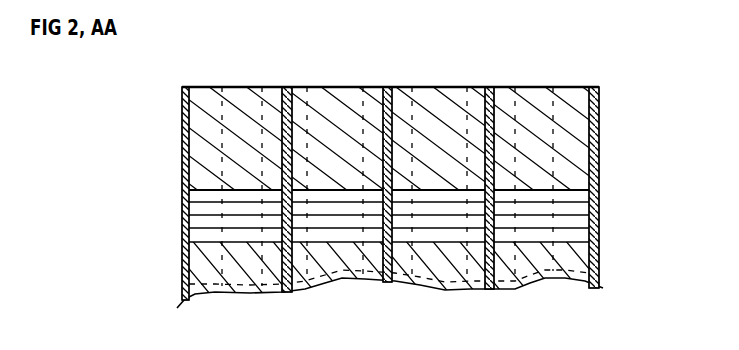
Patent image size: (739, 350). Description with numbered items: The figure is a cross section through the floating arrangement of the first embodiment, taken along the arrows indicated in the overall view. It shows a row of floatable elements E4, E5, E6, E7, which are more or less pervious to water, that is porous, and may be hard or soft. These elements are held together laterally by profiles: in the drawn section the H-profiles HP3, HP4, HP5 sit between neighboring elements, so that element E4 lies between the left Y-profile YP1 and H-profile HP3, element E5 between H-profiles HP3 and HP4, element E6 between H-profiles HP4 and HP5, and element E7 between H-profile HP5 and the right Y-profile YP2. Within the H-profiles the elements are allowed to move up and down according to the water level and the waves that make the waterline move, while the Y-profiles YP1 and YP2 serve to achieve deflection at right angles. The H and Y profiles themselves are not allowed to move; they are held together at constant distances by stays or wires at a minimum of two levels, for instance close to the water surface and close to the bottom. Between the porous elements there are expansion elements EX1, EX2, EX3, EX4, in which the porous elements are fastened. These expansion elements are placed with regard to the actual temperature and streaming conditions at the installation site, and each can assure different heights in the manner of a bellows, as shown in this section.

The Y-profile YP1 is at (183, 86).
The Y-profile YP2 is at (597, 86).
The H-profile HP3 is at (287, 86).
The H-profile HP4 is at (388, 86).
The H-profile HP5 is at (492, 86).
The floatable element E4 is at (238, 86).
The floatable element E5 is at (337, 86).
The floatable element E6 is at (443, 86).
The floatable element E7 is at (545, 86).
The expansion element EX1 is at (207, 222).
The expansion element EX2 is at (345, 233).
The expansion element EX3 is at (455, 230).
The expansion element EX4 is at (568, 234).